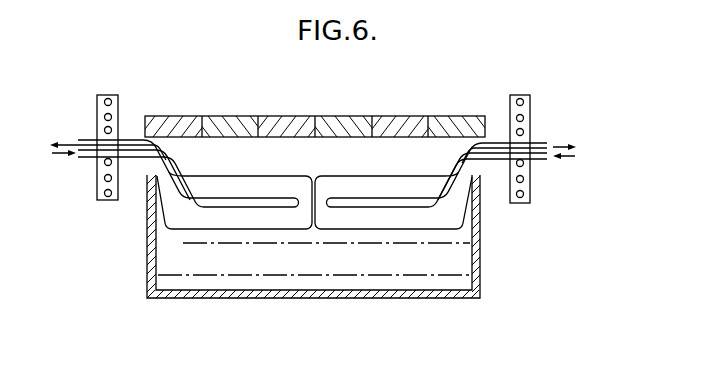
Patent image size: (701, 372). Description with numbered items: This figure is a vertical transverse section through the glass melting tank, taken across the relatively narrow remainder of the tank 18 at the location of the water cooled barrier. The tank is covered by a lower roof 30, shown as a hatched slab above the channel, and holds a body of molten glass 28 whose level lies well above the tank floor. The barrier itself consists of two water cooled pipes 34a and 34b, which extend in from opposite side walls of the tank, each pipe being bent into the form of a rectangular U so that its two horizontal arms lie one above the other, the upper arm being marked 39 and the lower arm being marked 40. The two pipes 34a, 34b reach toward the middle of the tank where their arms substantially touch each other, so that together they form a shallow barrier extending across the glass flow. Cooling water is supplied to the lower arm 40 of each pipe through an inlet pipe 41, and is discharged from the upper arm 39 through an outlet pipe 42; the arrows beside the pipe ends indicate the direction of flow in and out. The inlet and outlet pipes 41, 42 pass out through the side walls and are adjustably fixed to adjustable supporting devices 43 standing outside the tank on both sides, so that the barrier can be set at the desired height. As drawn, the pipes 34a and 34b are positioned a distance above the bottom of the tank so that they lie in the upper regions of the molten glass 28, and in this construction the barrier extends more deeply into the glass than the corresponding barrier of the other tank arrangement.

The narrow remainder of the tank 18 is at (480, 291).
The molten glass 28 is at (317, 263).
The lower roof 30 is at (326, 116).
The water cooled pipe 34a is at (176, 240).
The water cooled pipe 34b is at (450, 237).
The horizontal arm 39 is at (378, 188).
The horizontal arm 40 is at (395, 223).
The inlet pipe 41 is at (83, 159).
The outlet pipe 42 is at (82, 140).
The adjustable supporting device 43 is at (118, 112).